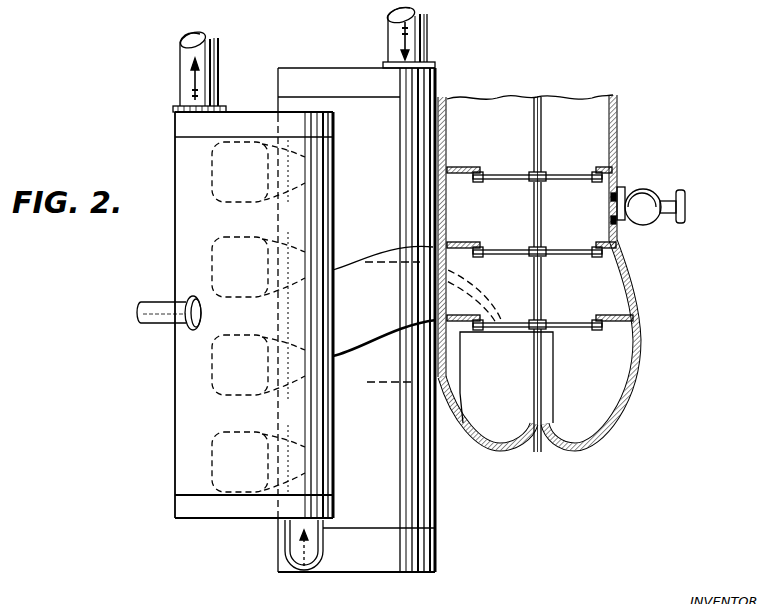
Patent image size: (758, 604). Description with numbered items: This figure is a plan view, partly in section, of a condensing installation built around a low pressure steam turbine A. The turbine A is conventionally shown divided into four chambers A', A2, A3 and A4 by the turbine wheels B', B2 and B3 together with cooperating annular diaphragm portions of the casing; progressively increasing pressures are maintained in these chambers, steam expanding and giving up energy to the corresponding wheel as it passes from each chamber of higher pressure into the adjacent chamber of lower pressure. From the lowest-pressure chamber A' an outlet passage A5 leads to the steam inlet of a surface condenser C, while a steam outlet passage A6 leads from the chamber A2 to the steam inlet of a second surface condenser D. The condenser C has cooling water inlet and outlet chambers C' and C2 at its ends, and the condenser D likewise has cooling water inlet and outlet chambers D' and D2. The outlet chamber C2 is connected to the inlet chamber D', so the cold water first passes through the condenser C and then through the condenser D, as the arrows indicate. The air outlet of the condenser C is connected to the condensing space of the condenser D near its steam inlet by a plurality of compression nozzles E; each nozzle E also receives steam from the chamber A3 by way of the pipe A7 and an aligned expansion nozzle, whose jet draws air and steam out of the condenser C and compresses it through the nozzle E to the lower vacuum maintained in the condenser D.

The low pressure steam turbine A is at (542, 271).
The turbine chamber A' is at (522, 274).
The turbine chamber A2 is at (556, 288).
The turbine chamber A3 is at (554, 214).
The turbine chamber A4 is at (530, 122).
The outlet passage A5 is at (453, 373).
The steam outlet passage A6 is at (428, 258).
The pipe A7 is at (647, 192).
The turbine wheel B' is at (540, 305).
The turbine wheel B2 is at (505, 251).
The turbine wheel B3 is at (497, 176).
The surface condenser C is at (356, 288).
The cooling water inlet chamber C' is at (367, 55).
The cooling water outlet chamber C2 is at (356, 546).
The surface condenser D is at (229, 315).
The cooling water inlet chamber D' is at (227, 508).
The cooling water outlet chamber D2 is at (242, 118).
The compression nozzle E is at (289, 252).